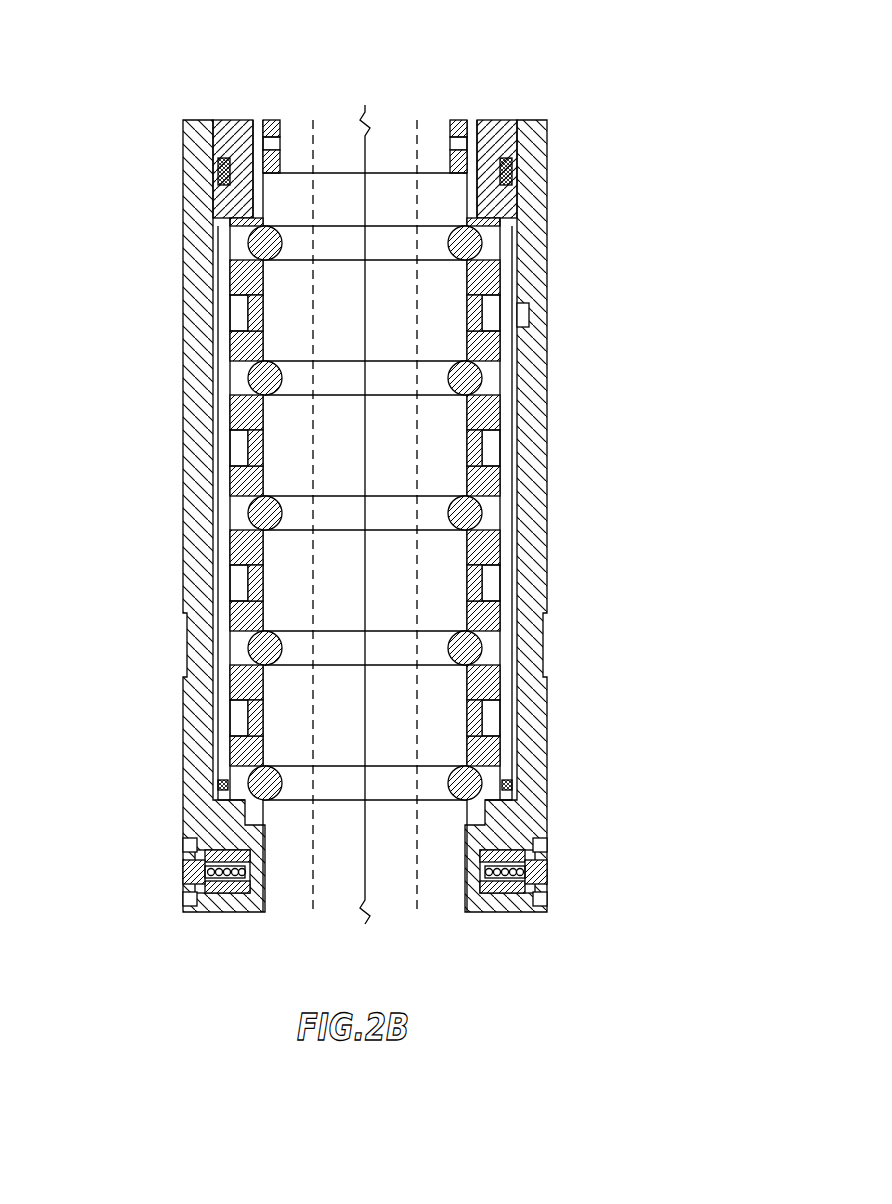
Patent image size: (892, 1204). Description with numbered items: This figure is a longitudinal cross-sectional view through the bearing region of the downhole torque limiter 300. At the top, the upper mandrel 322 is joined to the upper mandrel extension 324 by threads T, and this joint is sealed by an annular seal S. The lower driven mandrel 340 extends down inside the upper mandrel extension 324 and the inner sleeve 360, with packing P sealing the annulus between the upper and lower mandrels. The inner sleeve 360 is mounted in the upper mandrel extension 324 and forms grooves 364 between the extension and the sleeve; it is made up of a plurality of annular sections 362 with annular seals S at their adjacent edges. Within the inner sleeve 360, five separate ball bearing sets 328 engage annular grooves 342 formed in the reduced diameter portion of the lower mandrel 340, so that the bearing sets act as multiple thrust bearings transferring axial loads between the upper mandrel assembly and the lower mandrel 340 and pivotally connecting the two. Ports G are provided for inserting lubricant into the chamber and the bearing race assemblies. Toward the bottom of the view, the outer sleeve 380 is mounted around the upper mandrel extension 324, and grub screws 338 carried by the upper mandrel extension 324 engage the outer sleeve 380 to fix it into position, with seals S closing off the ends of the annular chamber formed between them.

The torque limiter 300 is at (620, 93).
The upper mandrel 322 is at (497, 122).
The upper mandrel extension 324 is at (497, 232).
The ball bearing sets 328 is at (478, 212).
The grub screws 338 is at (548, 862).
The lower driven mandrel 340 is at (438, 888).
The annular grooves 342 is at (480, 266).
The inner sleeve 360 is at (218, 290).
The annular sections 362 is at (225, 278).
The grooves 364 is at (213, 543).
The outer sleeve 380 is at (548, 900).
The packing P is at (268, 125).
The threads T is at (547, 130).
The annular seal S is at (222, 172).
The ports G is at (529, 313).